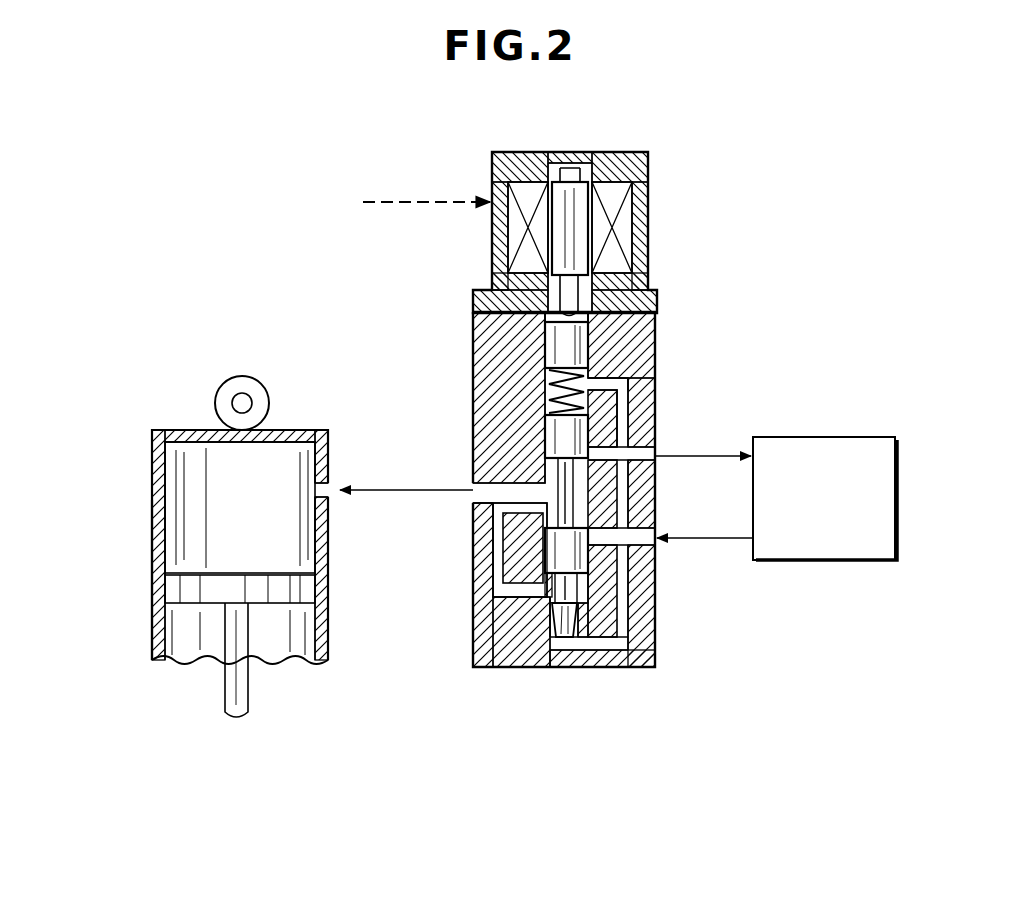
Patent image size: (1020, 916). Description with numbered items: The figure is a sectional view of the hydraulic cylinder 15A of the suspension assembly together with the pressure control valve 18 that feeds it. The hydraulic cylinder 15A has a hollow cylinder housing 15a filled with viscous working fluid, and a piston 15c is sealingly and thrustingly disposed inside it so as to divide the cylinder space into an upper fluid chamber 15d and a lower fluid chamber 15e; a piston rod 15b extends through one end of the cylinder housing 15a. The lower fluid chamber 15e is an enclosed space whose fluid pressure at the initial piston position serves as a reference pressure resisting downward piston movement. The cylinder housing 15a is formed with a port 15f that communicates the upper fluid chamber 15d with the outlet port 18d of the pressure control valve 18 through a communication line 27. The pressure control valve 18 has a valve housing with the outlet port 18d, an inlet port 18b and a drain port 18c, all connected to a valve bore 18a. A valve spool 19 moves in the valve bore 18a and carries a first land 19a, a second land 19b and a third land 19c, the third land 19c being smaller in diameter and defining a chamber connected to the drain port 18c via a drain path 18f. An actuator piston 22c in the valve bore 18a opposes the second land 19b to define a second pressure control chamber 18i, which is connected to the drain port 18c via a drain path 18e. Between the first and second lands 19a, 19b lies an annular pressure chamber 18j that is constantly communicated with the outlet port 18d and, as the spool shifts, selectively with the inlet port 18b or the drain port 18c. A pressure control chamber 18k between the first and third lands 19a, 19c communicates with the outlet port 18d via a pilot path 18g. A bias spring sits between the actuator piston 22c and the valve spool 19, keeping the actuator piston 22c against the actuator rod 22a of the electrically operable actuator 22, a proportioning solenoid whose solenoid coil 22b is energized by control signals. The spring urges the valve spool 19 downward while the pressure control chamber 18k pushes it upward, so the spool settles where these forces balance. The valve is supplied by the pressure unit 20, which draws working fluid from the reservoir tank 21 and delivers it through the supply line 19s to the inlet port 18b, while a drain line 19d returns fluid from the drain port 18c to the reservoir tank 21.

The cylinder housing 15a is at (160, 531).
The hydraulic cylinder 15A is at (150, 588).
The piston rod 15b is at (250, 700).
The piston 15c is at (305, 597).
The upper fluid chamber 15d is at (180, 478).
The lower fluid chamber 15e is at (178, 640).
The port 15f is at (336, 482).
The communication line 27 is at (375, 494).
The pressure control valve 18 is at (560, 524).
The valve bore 18a is at (546, 345).
The inlet port 18b is at (657, 552).
The drain port 18c is at (655, 428).
The outlet port 18d is at (535, 472).
The drain path 18e is at (655, 392).
The drain path 18f is at (606, 668).
The pilot path 18g is at (522, 605).
The second pressure control chamber 18i is at (655, 352).
The annular pressure chamber 18j is at (655, 453).
The pressure control chamber 18k is at (570, 668).
The valve spool 19 is at (545, 565).
The first land 19a is at (548, 548).
The second land 19b is at (560, 441).
The third land 19c is at (556, 626).
The drain line 19d is at (701, 459).
The supply line 19s is at (684, 537).
The pressure unit 20 is at (813, 437).
The reservoir tank 21 is at (556, 389).
The electrically operable actuator 22 is at (650, 203).
The actuator rod 22a is at (576, 300).
The solenoid coil 22b is at (612, 188).
The actuator piston 22c is at (558, 330).